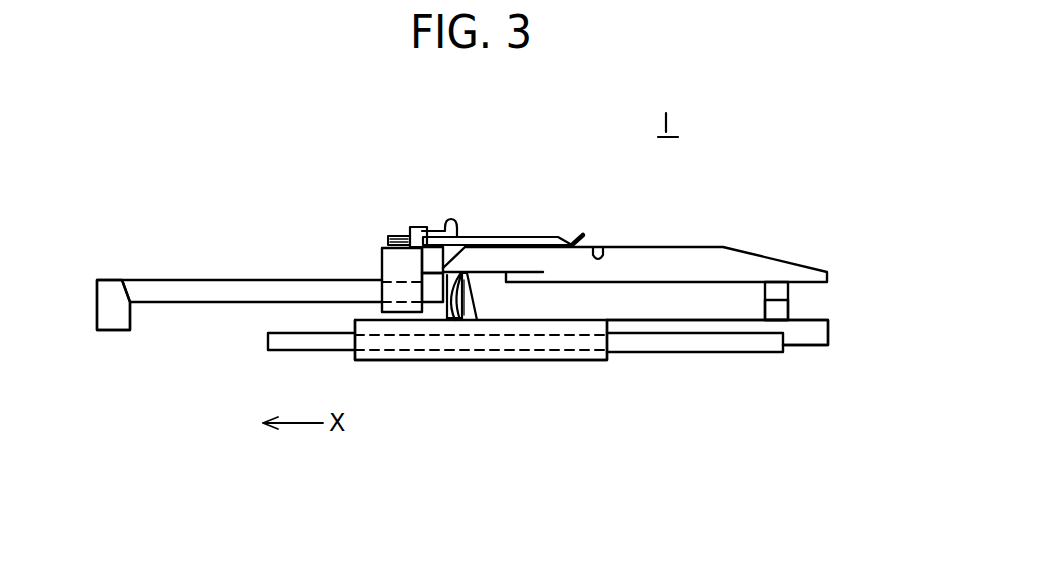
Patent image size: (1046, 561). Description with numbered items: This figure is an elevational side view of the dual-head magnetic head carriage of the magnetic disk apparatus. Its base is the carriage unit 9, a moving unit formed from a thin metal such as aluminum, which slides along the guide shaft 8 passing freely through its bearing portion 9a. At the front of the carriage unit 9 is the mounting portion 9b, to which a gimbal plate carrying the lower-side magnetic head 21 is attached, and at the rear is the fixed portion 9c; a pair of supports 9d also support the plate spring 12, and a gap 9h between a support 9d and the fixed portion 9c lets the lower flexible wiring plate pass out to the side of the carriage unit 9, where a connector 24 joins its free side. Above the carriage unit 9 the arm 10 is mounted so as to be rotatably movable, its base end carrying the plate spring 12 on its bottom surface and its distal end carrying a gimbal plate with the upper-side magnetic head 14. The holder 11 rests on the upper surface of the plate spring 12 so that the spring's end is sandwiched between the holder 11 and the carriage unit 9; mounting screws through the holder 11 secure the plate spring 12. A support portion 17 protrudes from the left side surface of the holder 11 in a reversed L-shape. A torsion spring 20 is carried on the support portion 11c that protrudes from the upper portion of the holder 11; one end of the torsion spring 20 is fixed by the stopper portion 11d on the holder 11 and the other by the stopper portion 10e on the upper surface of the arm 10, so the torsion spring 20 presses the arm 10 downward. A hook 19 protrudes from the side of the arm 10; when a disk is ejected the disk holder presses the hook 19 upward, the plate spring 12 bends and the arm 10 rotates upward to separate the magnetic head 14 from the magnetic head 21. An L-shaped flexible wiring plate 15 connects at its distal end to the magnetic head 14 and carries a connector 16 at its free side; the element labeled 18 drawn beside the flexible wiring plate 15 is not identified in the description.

The guide shaft 8 is at (705, 340).
The carriage unit 9 is at (498, 361).
The bearing portion 9a is at (567, 340).
The mounting portion 9b is at (820, 340).
The fixed portion 9c is at (444, 318).
The supports 9d is at (467, 298).
The gap 9h is at (460, 272).
The arm 10 is at (700, 257).
The stopper portion 10e is at (575, 243).
The holder 11 is at (378, 247).
The support portion 11c is at (427, 226).
The stopper portion 11d is at (398, 242).
The plate spring 12 is at (472, 270).
The magnetic head 14 is at (782, 290).
The flexible wiring plate 15 is at (239, 330).
The arm 18 is at (197, 292).
The connector 16 is at (115, 351).
The connector 24 is at (113, 320).
The support portion 17 is at (382, 263).
The hook 19 is at (600, 247).
The torsion spring 20 is at (522, 238).
The magnetic head 21 is at (780, 312).